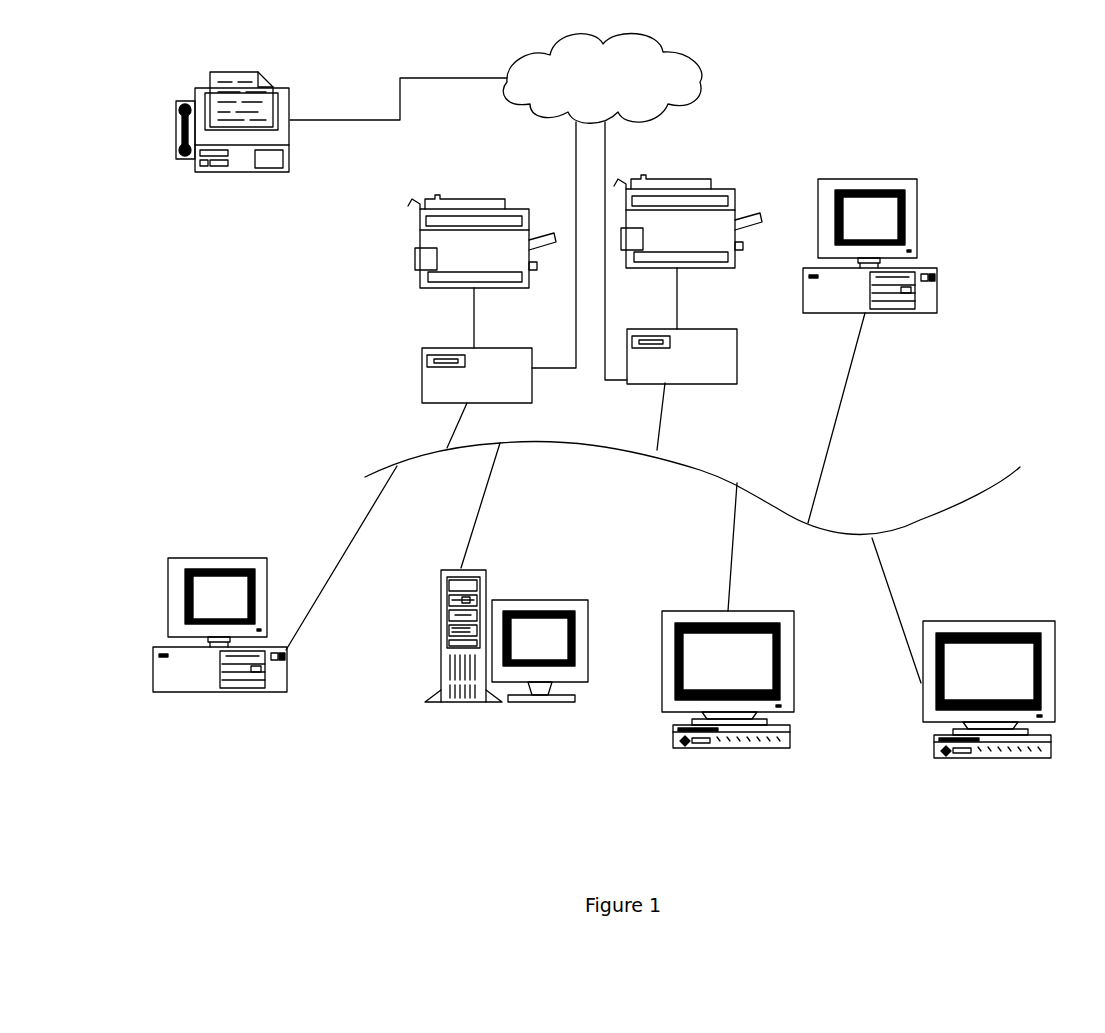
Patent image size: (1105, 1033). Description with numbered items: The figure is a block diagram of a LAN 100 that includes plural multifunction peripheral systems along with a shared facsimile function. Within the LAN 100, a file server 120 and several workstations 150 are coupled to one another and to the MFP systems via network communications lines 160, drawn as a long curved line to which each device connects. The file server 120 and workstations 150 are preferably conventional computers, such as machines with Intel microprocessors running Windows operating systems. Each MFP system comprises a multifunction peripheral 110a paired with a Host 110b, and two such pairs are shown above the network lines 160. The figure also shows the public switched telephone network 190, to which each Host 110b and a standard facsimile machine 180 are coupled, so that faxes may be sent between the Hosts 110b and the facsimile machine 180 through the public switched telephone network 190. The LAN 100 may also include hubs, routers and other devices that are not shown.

The LAN 100 is at (245, 496).
The multifunction peripheral 110a is at (420, 232).
The Host 110b is at (422, 363).
The file server 120 is at (461, 570).
The workstations 150 is at (215, 557).
The network communications lines 160 is at (395, 443).
The facsimile machine 180 is at (232, 174).
The public switched telephone network 190 is at (700, 74).